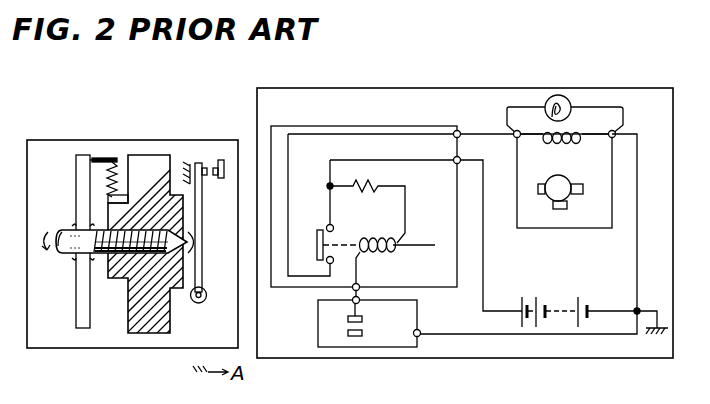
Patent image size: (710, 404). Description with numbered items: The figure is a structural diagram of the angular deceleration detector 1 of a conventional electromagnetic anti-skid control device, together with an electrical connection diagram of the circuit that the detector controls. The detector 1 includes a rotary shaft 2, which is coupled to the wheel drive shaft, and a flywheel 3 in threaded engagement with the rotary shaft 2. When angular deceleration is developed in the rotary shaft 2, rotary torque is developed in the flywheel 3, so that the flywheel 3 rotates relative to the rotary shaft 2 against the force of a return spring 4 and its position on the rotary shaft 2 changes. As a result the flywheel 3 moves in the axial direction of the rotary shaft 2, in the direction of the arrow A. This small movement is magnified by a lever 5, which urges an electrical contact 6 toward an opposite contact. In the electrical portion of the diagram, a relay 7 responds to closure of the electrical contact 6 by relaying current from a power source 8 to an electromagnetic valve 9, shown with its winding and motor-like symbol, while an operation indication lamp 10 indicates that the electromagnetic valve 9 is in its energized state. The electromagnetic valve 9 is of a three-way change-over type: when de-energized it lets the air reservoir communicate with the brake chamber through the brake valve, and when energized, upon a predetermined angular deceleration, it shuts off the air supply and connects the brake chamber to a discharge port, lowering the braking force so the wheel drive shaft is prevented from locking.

The angular deceleration detector 1 is at (43, 348).
The rotary shaft 2 is at (73, 257).
The flywheel 3 is at (155, 333).
The return spring 4 is at (116, 176).
The lever 5 is at (197, 248).
The electrical contact 6 is at (212, 160).
The relay 7 is at (421, 126).
The power source 8 is at (537, 302).
The electromagnetic valve 9 is at (612, 166).
The operation indication lamp 10 is at (558, 95).